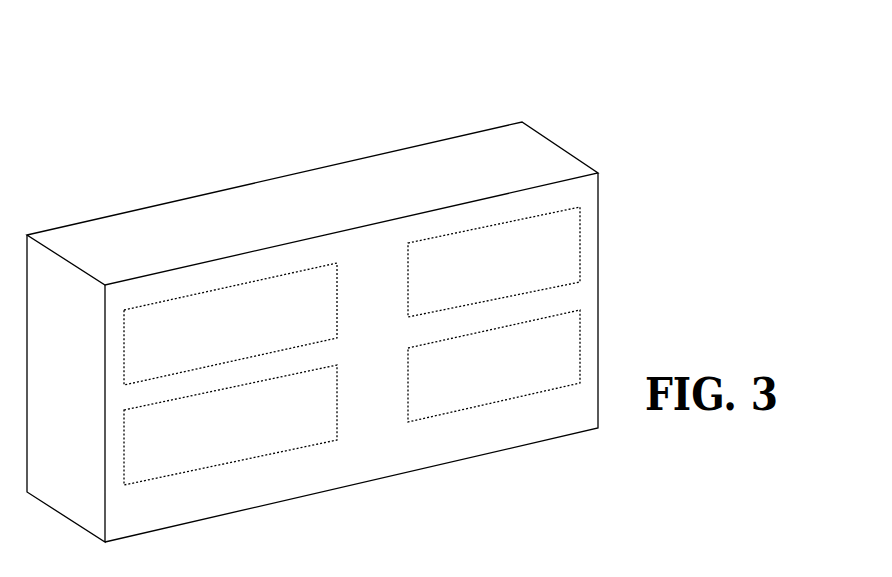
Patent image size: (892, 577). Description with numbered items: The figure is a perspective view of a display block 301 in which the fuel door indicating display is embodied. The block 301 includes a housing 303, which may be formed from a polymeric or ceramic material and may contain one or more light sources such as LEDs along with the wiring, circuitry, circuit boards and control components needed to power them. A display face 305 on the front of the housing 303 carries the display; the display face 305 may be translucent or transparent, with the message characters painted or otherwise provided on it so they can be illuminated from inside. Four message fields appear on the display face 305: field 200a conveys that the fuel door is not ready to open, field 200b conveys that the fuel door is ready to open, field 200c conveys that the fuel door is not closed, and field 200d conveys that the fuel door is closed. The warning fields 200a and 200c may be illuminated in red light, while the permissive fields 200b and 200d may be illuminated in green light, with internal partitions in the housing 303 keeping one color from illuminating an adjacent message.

The block 301 is at (263, 163).
The housing 303 is at (390, 177).
The display face 305 is at (389, 363).
The field 200a is at (197, 292).
The field 200b is at (475, 227).
The field 200c is at (123, 448).
The field 200d is at (578, 347).